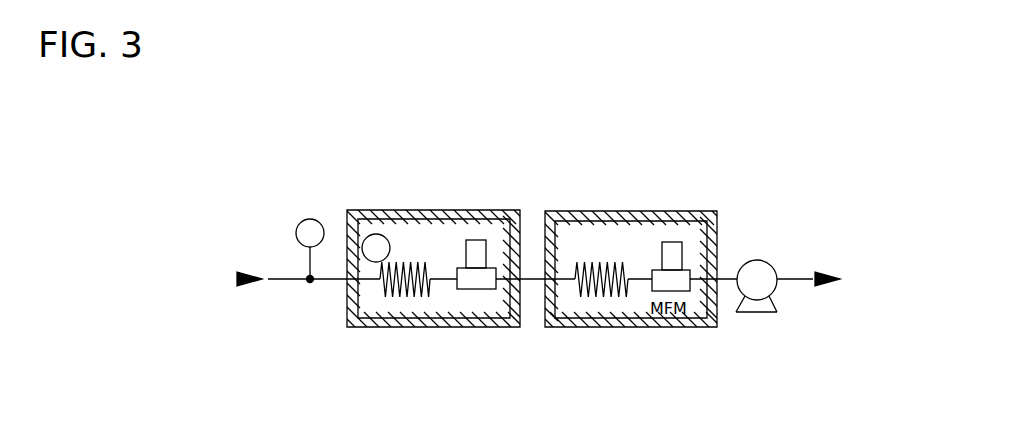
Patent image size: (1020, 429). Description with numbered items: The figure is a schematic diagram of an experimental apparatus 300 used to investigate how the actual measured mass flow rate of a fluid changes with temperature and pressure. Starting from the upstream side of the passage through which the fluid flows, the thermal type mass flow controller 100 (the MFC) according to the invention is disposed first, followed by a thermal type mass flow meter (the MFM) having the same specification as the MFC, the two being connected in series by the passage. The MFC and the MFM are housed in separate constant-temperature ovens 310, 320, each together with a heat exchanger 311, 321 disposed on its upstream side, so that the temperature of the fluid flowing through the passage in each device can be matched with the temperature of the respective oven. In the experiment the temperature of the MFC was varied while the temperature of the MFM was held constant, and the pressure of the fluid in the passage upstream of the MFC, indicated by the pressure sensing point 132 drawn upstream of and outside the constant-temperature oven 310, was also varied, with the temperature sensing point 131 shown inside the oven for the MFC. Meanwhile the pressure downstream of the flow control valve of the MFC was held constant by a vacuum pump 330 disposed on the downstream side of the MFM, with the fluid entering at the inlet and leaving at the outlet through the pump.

The experimental apparatus 300 is at (893, 151).
The pressure sensor P1 132 is at (311, 218).
The temperature sensor T1 131 is at (376, 233).
The thermal type mass flow controller 100 is at (477, 240).
The constant-temperature oven 310 is at (465, 327).
The heat exchanger 311 is at (397, 298).
The constant-temperature oven 320 is at (665, 327).
The heat exchanger 321 is at (591, 298).
The vacuum pump 330 is at (757, 312).